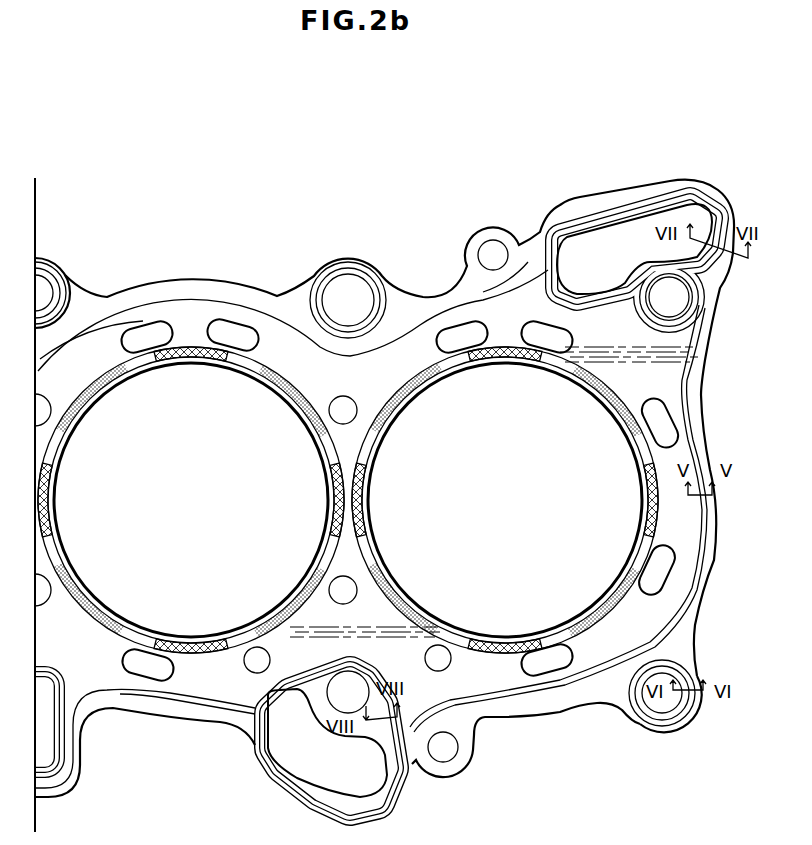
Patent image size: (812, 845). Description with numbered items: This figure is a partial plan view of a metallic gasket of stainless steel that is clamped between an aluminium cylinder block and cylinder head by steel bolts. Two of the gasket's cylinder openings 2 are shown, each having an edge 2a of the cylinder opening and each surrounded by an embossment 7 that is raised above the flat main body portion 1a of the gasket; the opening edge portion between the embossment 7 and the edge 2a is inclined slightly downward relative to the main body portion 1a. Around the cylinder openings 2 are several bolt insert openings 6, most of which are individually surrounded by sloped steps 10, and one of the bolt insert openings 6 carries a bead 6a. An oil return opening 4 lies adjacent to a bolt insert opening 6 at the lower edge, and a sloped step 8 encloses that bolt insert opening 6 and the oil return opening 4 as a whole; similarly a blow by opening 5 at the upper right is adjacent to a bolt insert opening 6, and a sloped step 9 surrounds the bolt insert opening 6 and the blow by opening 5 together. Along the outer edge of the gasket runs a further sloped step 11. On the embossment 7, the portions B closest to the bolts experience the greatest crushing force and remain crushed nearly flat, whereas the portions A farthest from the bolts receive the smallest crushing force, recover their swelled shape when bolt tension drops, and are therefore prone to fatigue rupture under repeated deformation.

The main body portion 1a is at (195, 286).
The cylinder opening 2 is at (198, 490).
The edge of the cylinder opening 2a is at (90, 585).
The oil return opening 4 is at (336, 777).
The blow by opening 5 is at (583, 274).
The bolt insert opening 6 is at (50, 305).
The bolt hole bead 6a is at (658, 707).
The embossment 7 is at (57, 448).
The sloped step 8 is at (396, 745).
The sloped step 9 is at (608, 216).
The sloped step 10 is at (62, 278).
The sloped step 11 is at (716, 202).
The portion farthest from the bolt A is at (192, 356).
The portion closest to the bolt B is at (89, 402).